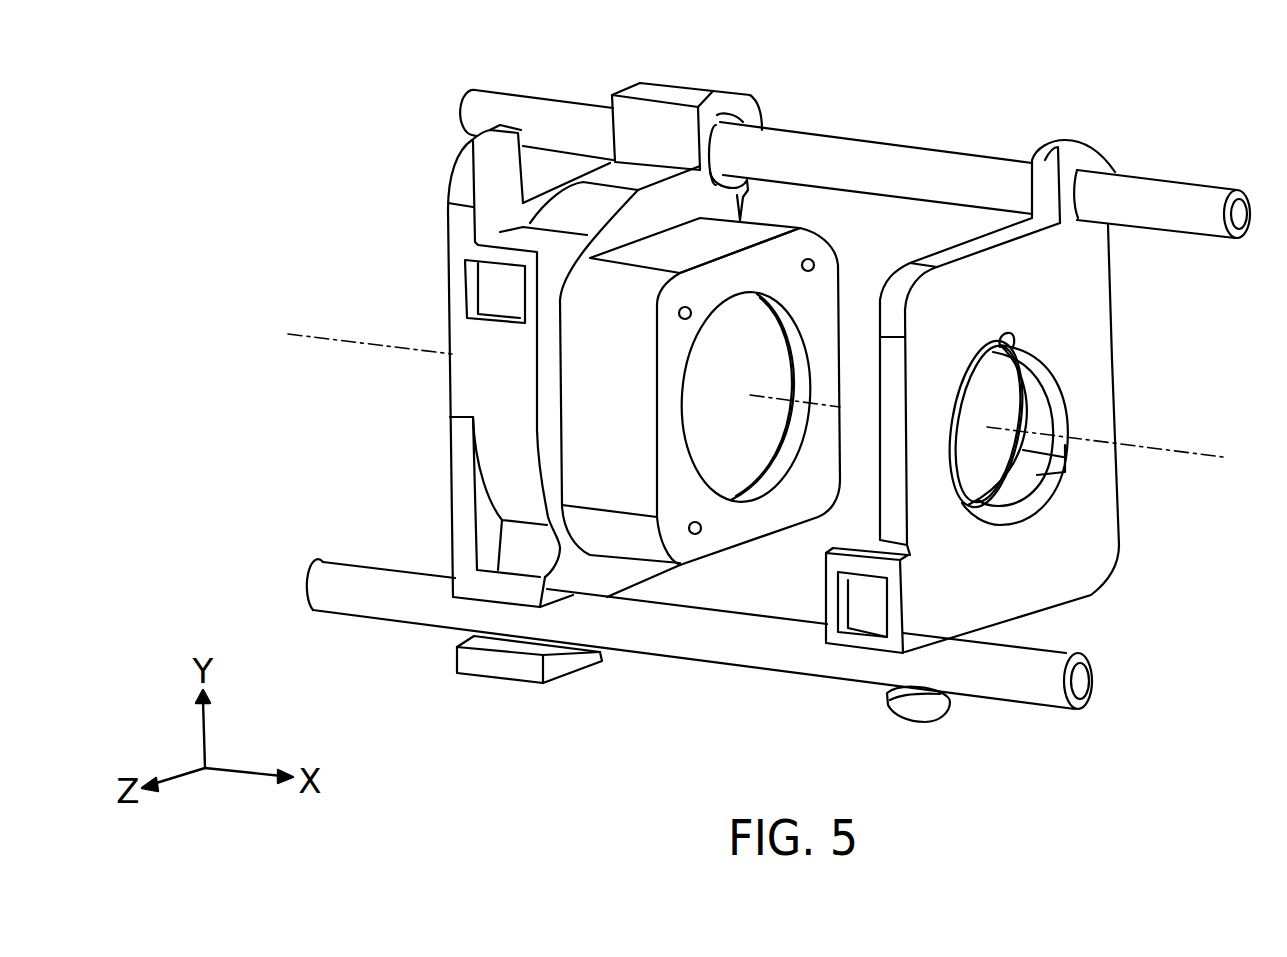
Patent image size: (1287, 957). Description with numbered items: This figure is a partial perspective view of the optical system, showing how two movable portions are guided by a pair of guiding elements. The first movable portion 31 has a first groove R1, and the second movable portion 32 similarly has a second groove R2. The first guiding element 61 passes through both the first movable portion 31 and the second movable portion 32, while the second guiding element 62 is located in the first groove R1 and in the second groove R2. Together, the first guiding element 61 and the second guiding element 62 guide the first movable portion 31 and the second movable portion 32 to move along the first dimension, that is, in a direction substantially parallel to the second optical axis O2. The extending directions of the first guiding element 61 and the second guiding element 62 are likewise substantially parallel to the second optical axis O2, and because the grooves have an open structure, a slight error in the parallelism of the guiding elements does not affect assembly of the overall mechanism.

The first movable portion 31 is at (462, 400).
The second movable portion 32 is at (1087, 343).
The first guiding element 61 is at (851, 155).
The second guiding element 62 is at (700, 650).
The second optical axis O2 is at (538, 359).
The first groove R1 is at (495, 667).
The second groove R2 is at (890, 707).